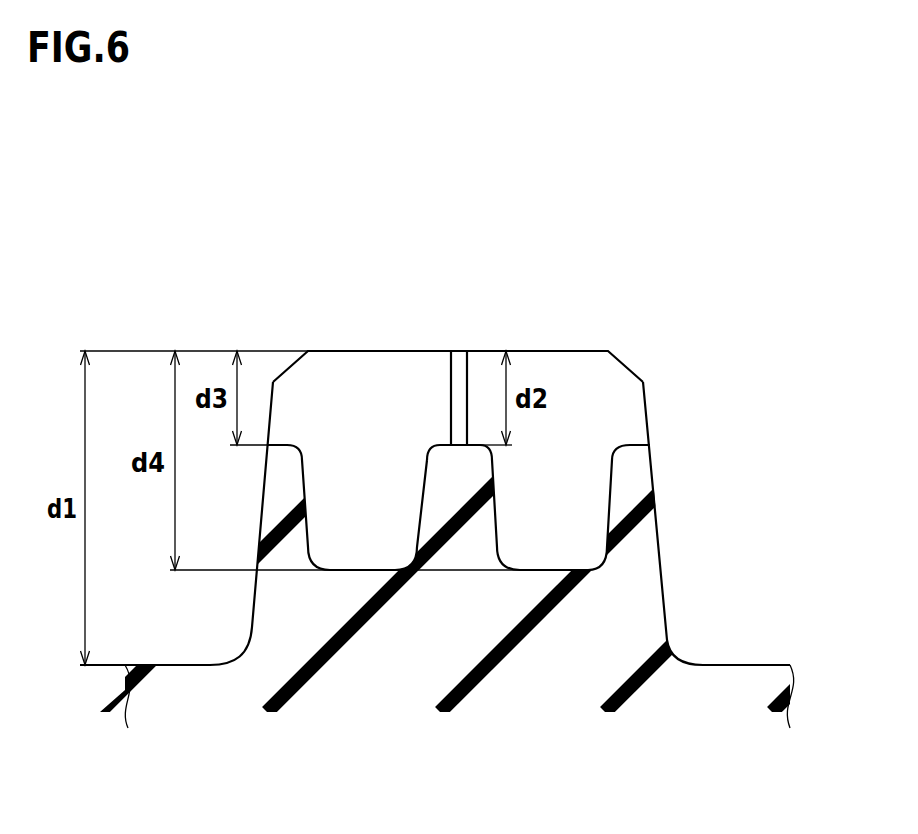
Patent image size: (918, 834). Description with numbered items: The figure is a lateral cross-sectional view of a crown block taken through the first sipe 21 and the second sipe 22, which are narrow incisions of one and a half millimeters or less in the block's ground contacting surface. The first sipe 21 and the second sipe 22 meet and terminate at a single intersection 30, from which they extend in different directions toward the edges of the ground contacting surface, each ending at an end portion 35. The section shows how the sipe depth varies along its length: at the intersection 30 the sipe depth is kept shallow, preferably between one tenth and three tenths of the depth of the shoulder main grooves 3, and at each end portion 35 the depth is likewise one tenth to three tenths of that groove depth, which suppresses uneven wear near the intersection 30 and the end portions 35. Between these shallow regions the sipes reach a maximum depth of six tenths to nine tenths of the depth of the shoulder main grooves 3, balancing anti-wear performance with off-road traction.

The shoulder main groove 3 is at (207, 630).
The first sipe 21 is at (364, 403).
The second sipe 22 is at (576, 405).
The intersection 30 is at (459, 346).
The end portion 35 is at (284, 437).